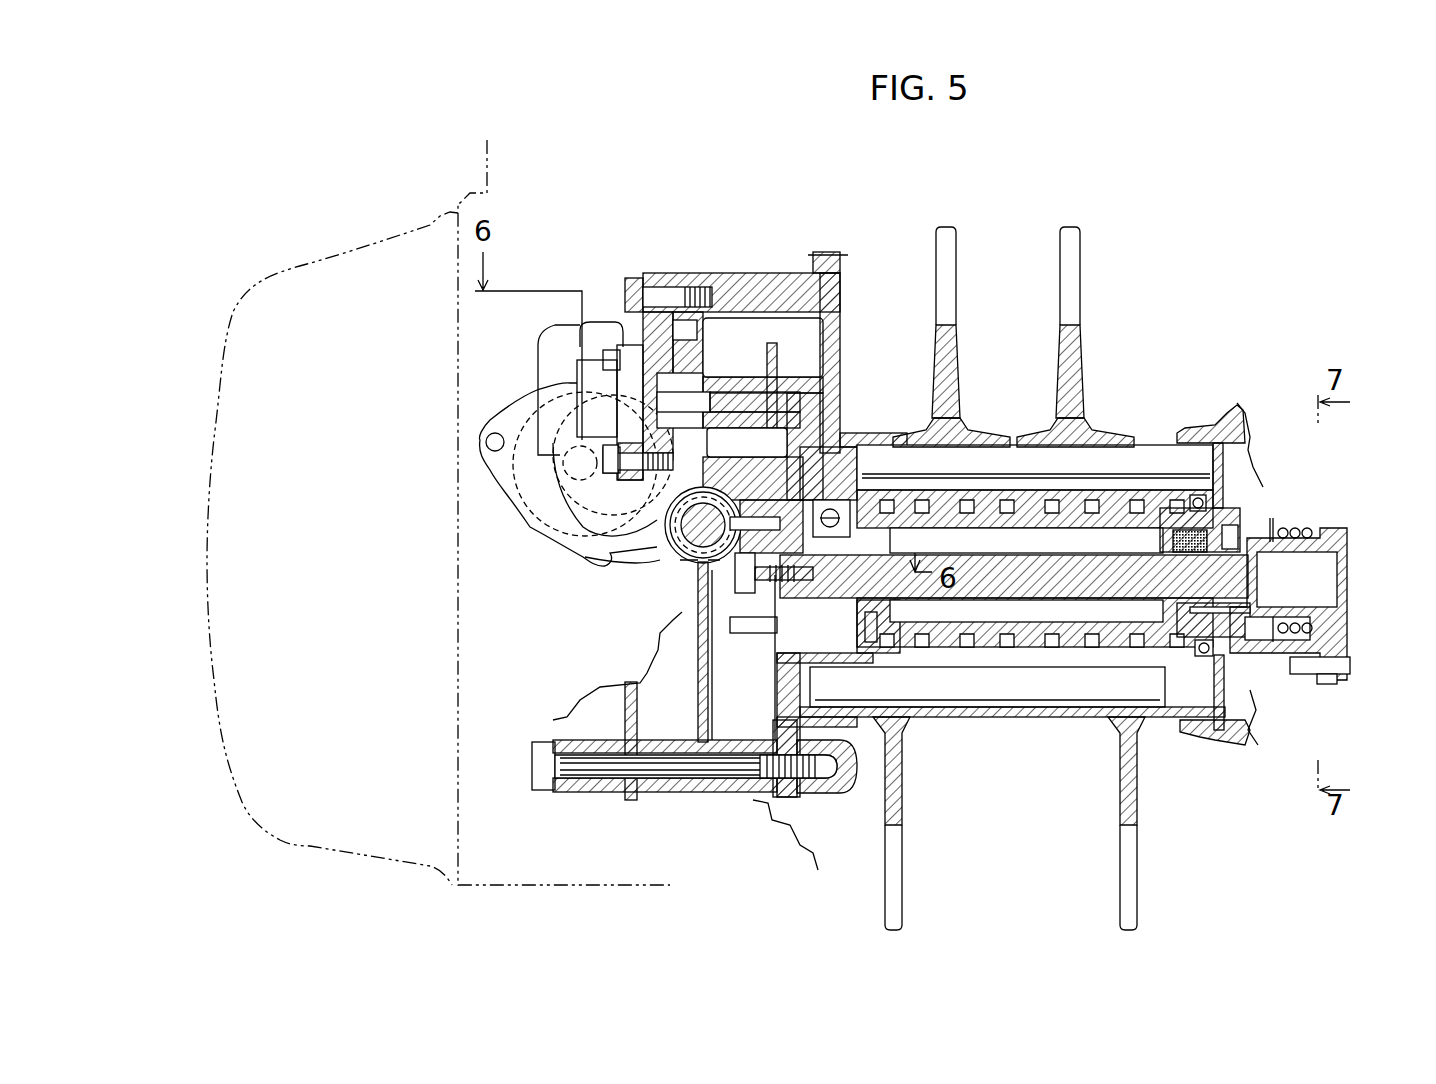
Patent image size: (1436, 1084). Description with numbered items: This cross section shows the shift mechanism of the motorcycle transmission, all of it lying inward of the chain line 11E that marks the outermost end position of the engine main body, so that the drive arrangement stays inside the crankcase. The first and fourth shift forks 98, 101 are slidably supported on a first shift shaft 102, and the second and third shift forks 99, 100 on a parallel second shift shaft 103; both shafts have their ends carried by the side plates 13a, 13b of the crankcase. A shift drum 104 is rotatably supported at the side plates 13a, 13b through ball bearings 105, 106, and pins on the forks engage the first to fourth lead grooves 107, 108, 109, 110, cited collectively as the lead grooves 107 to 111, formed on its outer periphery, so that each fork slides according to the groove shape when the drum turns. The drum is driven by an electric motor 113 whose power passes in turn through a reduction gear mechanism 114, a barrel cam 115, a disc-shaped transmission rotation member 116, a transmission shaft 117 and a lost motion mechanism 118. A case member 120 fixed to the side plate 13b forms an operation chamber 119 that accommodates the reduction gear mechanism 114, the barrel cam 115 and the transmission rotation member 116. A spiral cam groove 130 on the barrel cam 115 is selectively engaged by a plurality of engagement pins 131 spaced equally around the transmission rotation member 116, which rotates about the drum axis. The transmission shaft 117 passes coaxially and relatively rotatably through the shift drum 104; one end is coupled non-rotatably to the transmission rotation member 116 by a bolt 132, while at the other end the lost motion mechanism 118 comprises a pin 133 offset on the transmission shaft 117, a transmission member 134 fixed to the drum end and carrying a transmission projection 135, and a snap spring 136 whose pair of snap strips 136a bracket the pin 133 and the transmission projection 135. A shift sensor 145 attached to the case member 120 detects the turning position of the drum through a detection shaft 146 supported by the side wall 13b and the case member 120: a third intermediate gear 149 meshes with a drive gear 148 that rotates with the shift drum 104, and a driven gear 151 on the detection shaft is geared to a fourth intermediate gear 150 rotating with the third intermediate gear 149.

The chain line 11E is at (205, 520).
The reduction gear mechanism 114 is at (535, 345).
The shift sensor 145 is at (568, 426).
The electric motor 113 is at (520, 520).
The lead groove 111 is at (627, 590).
The case member 120 is at (780, 272).
The driven gear 151 is at (835, 320).
The side plate 13b is at (835, 340).
The detection shaft 146 is at (740, 388).
The fourth intermediate gear 150 is at (770, 485).
The third intermediate gear 149 is at (845, 460).
The ball bearing 106 is at (832, 497).
The barrel cam 115 is at (705, 560).
The engagement pins 131 is at (730, 526).
The bolt 132 is at (745, 580).
The cam groove 130 is at (700, 580).
The transmission rotation member 116 is at (782, 645).
The operation chamber 119 is at (732, 733).
The drive gear 148 is at (810, 683).
The first shift shaft 102 is at (1002, 700).
The fourth lead groove 110 is at (890, 620).
The second shift shaft 103 is at (1032, 453).
The shift drum 104 is at (1040, 630).
The transmission shaft 117 is at (1035, 600).
The third shift fork 100 is at (950, 355).
The third lead groove 109 is at (955, 445).
The second shift fork 99 is at (1082, 362).
The second lead groove 108 is at (1076, 445).
The fourth shift fork 101 is at (905, 800).
The first shift fork 98 is at (1140, 805).
The side plate 13a is at (1205, 427).
The ball bearing 105 is at (1225, 505).
The transmission member 134 is at (1260, 660).
The snap spring 136 is at (1283, 525).
The lost motion mechanism 118 is at (1306, 520).
The transmission projection 135 is at (1320, 655).
The pin 133 is at (1297, 675).
The snap strips 136a is at (1330, 683).
The first lead groove 107 is at (1228, 740).